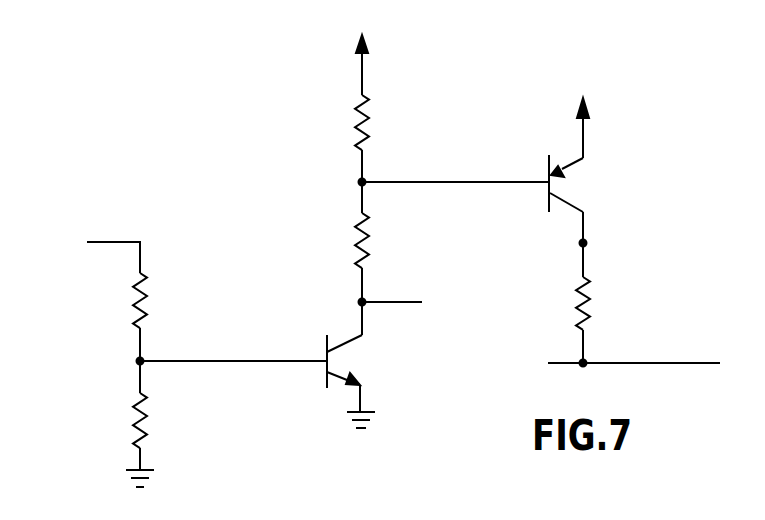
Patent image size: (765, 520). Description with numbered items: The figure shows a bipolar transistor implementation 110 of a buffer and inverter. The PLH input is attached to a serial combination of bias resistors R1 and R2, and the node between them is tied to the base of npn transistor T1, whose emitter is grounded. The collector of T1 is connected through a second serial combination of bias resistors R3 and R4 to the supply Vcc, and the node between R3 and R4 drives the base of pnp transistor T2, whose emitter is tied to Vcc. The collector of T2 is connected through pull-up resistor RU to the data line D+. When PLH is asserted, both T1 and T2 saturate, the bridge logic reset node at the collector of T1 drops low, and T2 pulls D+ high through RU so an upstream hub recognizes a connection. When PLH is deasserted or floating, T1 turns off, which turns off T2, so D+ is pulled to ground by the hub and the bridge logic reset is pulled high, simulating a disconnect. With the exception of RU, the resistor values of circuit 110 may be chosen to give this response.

The bipolar transistor implementation 110 is at (238, 131).
The bias resistor R1 is at (157, 300).
The bias resistor R2 is at (158, 420).
The bias resistor R3 is at (381, 122).
The bias resistor R4 is at (379, 240).
The pull-up resistor RU is at (602, 303).
The npn transistor T1 is at (355, 361).
The pnp transistor T2 is at (579, 183).